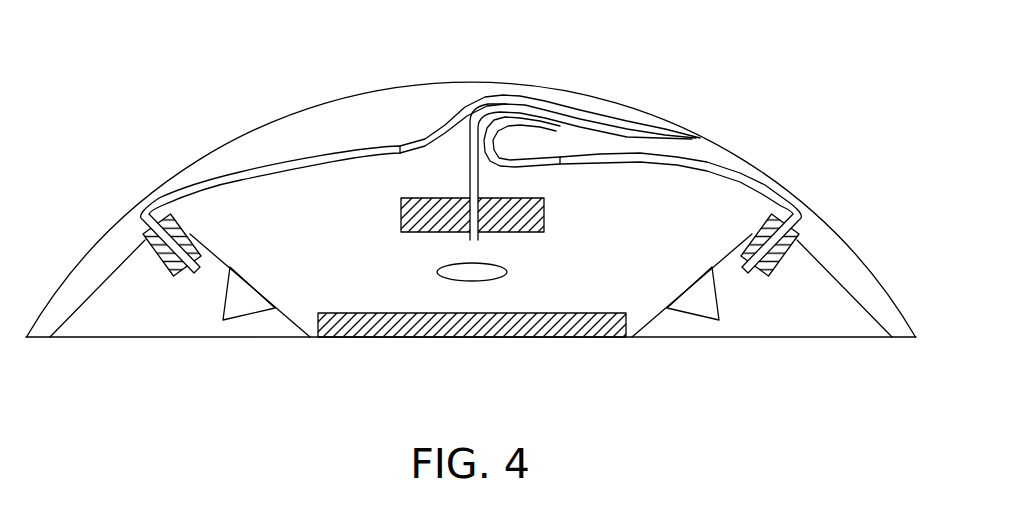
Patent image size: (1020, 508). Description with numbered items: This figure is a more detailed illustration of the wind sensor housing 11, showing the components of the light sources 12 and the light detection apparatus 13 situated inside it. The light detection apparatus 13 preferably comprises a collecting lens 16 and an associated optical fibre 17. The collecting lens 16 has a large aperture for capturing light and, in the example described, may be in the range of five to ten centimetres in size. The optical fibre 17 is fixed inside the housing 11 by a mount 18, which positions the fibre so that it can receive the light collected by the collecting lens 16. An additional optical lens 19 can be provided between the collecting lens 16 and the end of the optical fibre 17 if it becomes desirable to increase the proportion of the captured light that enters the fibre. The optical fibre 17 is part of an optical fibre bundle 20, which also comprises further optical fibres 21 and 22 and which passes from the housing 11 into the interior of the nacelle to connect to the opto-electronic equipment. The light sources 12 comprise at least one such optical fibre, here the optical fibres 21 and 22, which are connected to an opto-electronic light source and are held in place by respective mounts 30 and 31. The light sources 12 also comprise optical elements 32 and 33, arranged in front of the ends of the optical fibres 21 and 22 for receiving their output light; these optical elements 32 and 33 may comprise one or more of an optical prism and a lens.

The housing 11 is at (386, 68).
The light sources 12 is at (98, 360).
The light detection apparatus 13 is at (537, 360).
The collecting lens 16 is at (390, 340).
The optical fibre 17 is at (467, 184).
The mount 18 is at (547, 214).
The additional optical lens 19 is at (506, 271).
The optical fibre bundle 20 is at (580, 111).
The optical fibre 21 is at (227, 163).
The optical fibre 22 is at (718, 162).
The mount 30 is at (160, 268).
The mount 31 is at (783, 267).
The optical element 32 is at (237, 308).
The optical element 33 is at (705, 308).